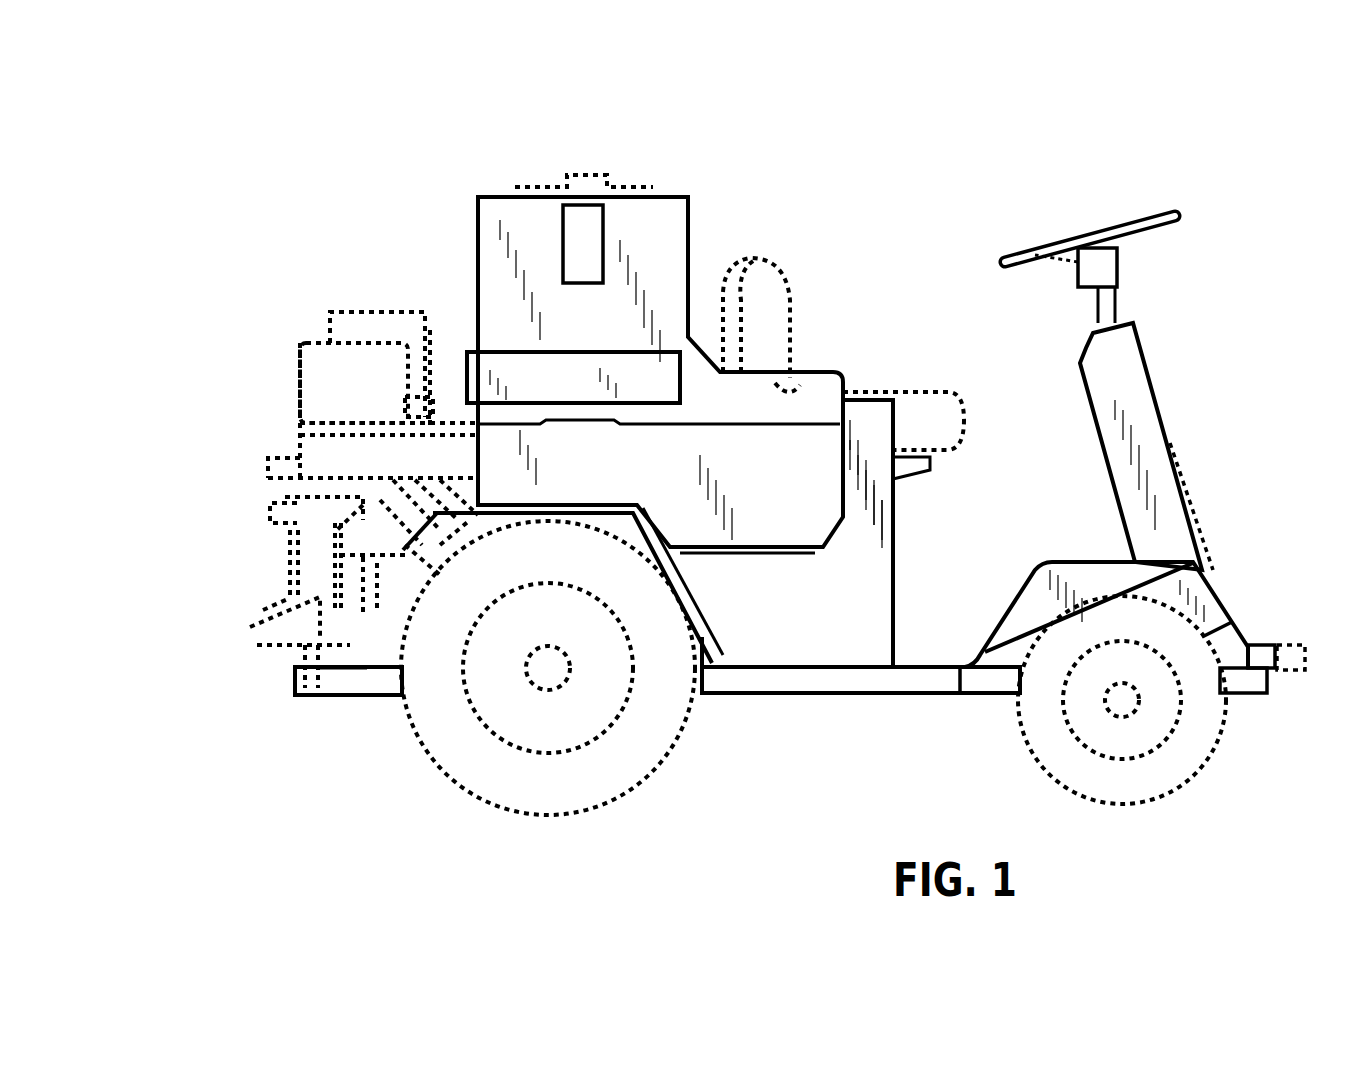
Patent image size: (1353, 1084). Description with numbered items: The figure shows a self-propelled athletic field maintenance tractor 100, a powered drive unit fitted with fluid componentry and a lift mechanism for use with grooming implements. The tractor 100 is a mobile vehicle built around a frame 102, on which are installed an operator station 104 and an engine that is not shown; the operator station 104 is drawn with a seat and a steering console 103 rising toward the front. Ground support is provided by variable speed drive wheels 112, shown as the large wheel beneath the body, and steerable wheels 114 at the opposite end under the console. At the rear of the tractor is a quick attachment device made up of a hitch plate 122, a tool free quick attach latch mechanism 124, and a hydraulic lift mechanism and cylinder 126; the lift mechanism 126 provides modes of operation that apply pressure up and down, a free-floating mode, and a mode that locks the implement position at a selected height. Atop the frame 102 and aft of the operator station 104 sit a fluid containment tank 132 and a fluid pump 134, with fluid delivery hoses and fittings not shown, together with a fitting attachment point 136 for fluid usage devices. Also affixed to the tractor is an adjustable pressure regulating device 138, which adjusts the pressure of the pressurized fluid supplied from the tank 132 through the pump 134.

The self-propelled athletic field maintenance tractor 100 is at (253, 303).
The frame 102 is at (893, 687).
The steering console 103 is at (1109, 393).
The operator station 104 is at (883, 307).
The variable speed drive wheels 112 is at (603, 772).
The steerable wheels 114 is at (1168, 773).
The hitch plate 122 is at (308, 538).
The tool free quick attach latch mechanism 124 is at (262, 633).
The hydraulic lift mechanism and cylinder 126 is at (405, 615).
The fluid containment tank 132 is at (500, 218).
The fluid pump 134 is at (330, 388).
The fitting attachment point 136 is at (297, 403).
The adjustable pressure regulating device 138 is at (870, 413).